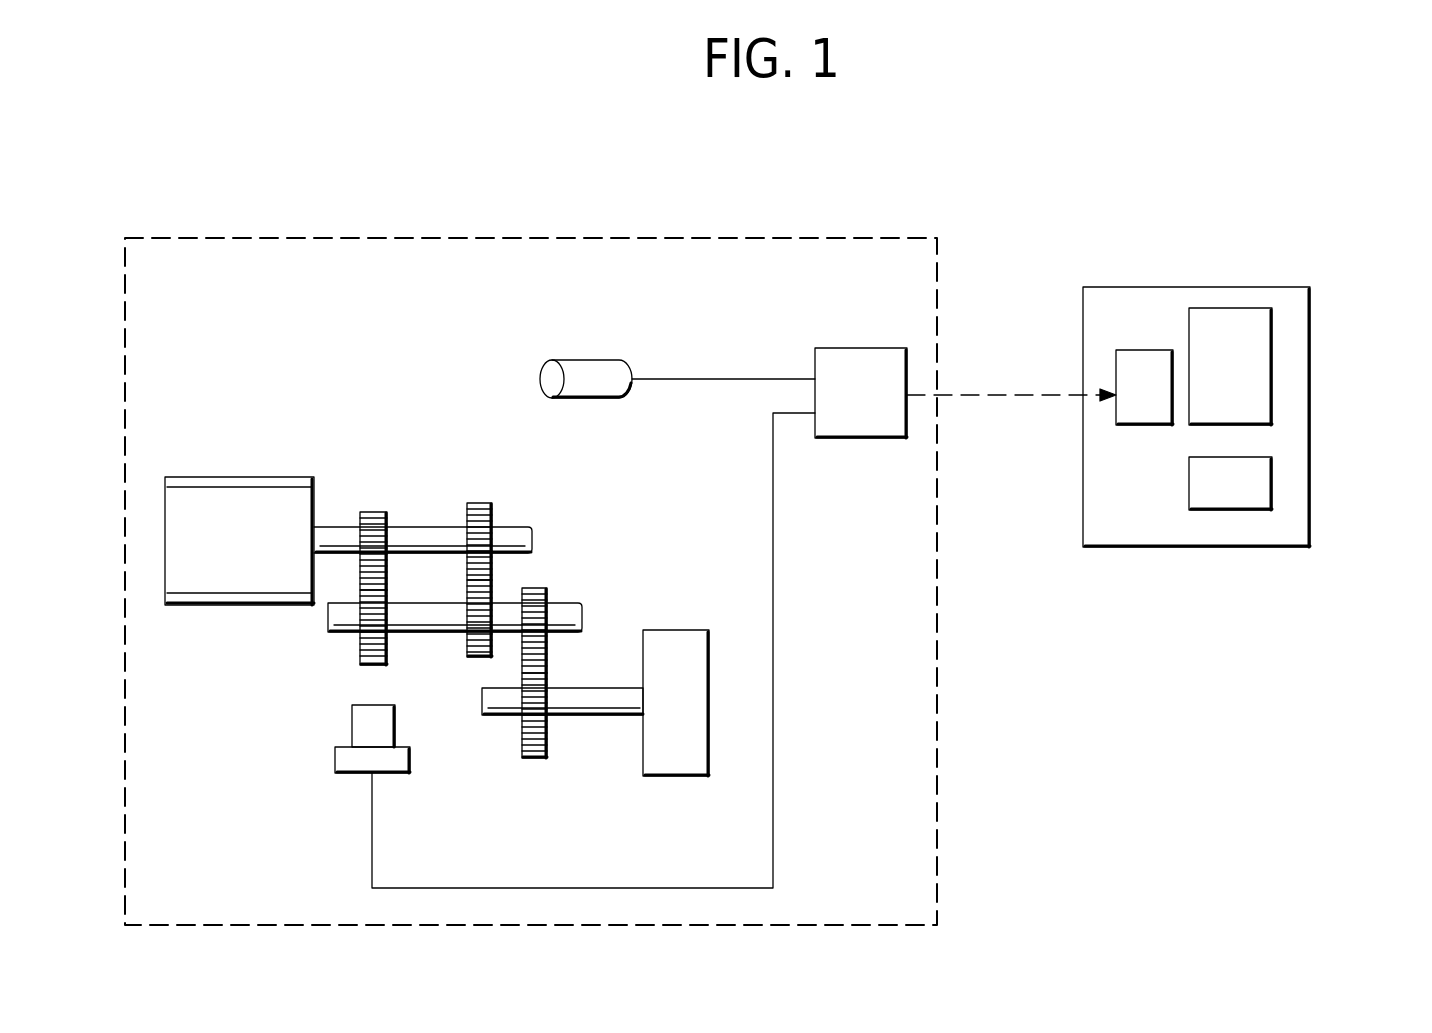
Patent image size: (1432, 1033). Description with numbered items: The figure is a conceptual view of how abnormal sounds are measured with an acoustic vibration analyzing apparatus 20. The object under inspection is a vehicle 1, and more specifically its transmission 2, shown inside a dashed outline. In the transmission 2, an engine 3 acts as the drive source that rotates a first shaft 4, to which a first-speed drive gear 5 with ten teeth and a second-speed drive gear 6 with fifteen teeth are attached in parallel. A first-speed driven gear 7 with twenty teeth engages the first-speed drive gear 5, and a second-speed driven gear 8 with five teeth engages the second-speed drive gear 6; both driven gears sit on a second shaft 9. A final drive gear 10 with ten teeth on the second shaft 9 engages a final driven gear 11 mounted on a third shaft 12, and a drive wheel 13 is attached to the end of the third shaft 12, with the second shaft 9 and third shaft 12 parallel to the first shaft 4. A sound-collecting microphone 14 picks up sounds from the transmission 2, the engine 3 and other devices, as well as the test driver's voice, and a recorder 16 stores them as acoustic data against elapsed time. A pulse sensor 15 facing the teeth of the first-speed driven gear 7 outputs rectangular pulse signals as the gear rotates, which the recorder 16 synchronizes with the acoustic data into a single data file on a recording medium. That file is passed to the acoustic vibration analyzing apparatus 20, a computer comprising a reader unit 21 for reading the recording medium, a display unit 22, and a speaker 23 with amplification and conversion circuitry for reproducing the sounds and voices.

The vehicle 1 is at (662, 235).
The transmission 2 is at (592, 500).
The engine 3 is at (233, 478).
The first shaft 4 is at (520, 527).
The first-speed drive gear 5 is at (373, 512).
The second-speed drive gear 6 is at (480, 503).
The first-speed driven gear 7 is at (360, 642).
The second-speed driven gear 8 is at (477, 657).
The second shaft 9 is at (570, 605).
The final drive gear 10 is at (582, 637).
The final driven gear 11 is at (530, 758).
The third shaft 12 is at (593, 715).
The drive wheel 13 is at (675, 775).
The sound-collecting microphone 14 is at (573, 368).
The pulse sensor 15 is at (335, 763).
The recorder 16 is at (862, 348).
The acoustic vibration analyzing apparatus 20 is at (1237, 285).
The reader unit 21 is at (1143, 352).
The display unit 22 is at (1268, 355).
The speaker 23 is at (1272, 485).